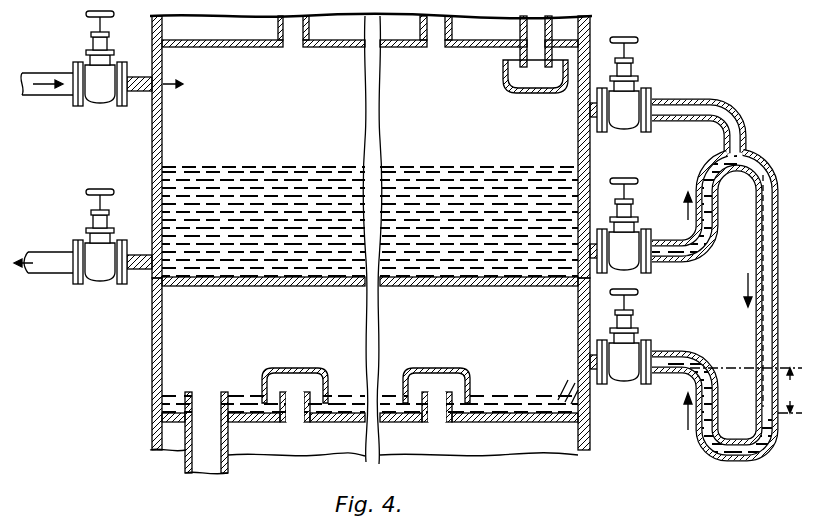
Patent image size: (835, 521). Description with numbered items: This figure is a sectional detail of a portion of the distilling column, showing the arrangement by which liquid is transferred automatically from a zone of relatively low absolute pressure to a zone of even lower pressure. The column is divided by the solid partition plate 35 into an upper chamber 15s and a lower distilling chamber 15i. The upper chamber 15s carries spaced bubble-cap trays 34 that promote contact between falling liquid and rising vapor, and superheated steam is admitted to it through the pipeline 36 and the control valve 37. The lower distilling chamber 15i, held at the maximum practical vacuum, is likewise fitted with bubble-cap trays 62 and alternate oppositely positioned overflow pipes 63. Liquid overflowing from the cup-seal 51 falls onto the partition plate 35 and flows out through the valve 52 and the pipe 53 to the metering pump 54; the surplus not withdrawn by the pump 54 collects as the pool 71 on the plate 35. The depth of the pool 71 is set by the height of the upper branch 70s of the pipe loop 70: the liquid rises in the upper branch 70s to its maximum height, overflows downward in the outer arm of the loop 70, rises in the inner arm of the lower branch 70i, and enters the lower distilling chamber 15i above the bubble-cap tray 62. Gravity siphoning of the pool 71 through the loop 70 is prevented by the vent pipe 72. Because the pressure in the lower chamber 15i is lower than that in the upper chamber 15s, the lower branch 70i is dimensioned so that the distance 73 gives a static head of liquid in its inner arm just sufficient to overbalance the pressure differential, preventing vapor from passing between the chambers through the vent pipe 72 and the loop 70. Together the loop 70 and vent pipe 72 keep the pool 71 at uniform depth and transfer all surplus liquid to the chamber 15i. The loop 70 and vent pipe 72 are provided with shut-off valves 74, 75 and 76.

The upper chamber 15s is at (152, 147).
The lower distilling chamber 15i is at (155, 360).
The bubble-cap trays 34 is at (338, 50).
The solid partition plate 35 is at (320, 286).
The pipeline 36 is at (47, 72).
The control valve 37 is at (112, 103).
The cup-seal 51 is at (532, 96).
The valve 52 is at (100, 286).
The pipe 53 is at (47, 253).
The metering pump 54 is at (69, 290).
The bubble-cap trays 62 is at (347, 427).
The overflow pipes 63 is at (230, 445).
The pipe loop 70 is at (779, 317).
The upper branch 70s is at (718, 215).
The lower branch 70i is at (748, 413).
The pool 71 is at (303, 167).
The vent pipe 72 is at (727, 98).
The distance 73 is at (749, 390).
The shut-off valve 74 is at (647, 340).
The shut-off valve 75 is at (647, 230).
The shut-off valve 76 is at (643, 93).